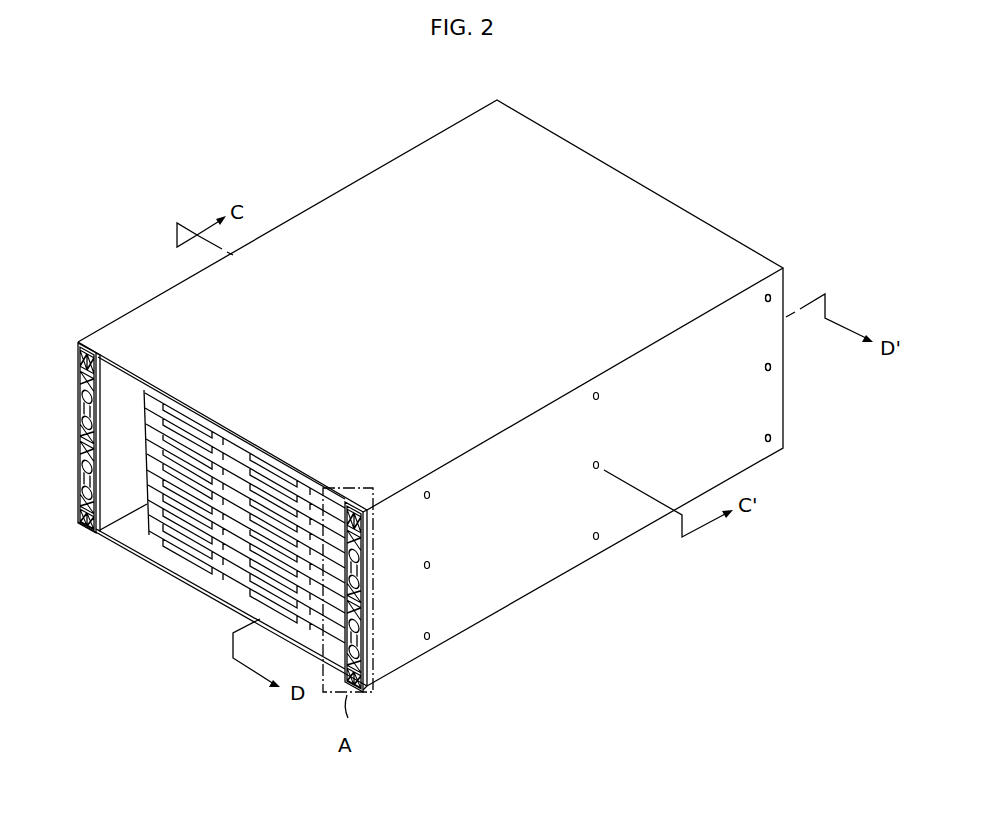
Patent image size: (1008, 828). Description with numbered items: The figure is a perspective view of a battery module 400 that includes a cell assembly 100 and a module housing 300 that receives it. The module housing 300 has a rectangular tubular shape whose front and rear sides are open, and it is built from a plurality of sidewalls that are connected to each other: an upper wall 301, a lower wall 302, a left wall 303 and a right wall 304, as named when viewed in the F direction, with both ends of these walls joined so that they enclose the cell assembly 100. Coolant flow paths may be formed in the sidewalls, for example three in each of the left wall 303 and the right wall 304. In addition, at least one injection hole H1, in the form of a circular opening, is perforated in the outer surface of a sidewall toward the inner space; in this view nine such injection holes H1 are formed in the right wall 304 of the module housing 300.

The battery module 400 is at (203, 104).
The module housing 300 is at (295, 210).
The upper wall 301 is at (113, 360).
The lower wall 302 is at (197, 592).
The left wall 303 is at (80, 434).
The right wall 304 is at (372, 683).
The cell assembly 100 is at (140, 535).
The injection hole H1 is at (771, 296).